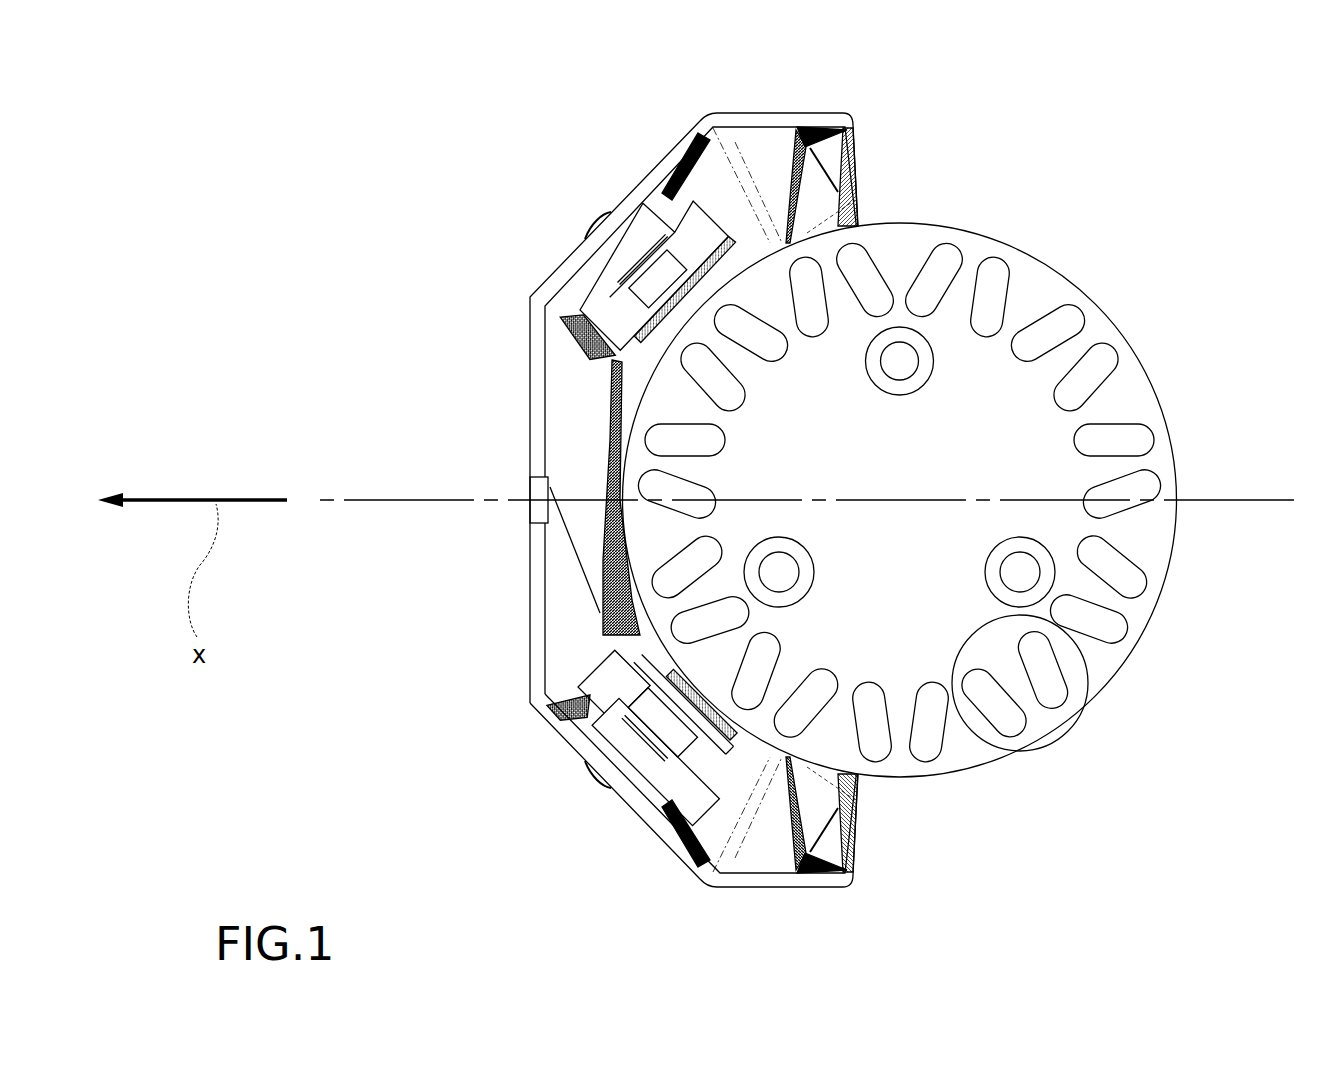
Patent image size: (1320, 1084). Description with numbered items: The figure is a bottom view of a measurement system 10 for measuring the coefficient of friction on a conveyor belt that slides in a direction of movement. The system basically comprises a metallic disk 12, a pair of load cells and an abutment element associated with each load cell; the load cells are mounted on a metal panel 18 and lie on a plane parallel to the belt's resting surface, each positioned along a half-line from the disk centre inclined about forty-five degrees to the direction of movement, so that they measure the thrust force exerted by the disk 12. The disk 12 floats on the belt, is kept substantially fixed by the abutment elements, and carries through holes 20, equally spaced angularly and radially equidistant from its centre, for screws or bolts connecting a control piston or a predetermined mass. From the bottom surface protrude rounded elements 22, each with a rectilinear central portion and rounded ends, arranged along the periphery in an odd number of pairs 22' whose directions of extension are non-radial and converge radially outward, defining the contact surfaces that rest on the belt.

The measurement system 10 is at (880, 126).
The disk 12 is at (1156, 372).
The metal panel 18 is at (533, 710).
The through holes 20 is at (942, 361).
The rounded element 22 is at (964, 500).
The pair of rounded elements 22' is at (1108, 689).